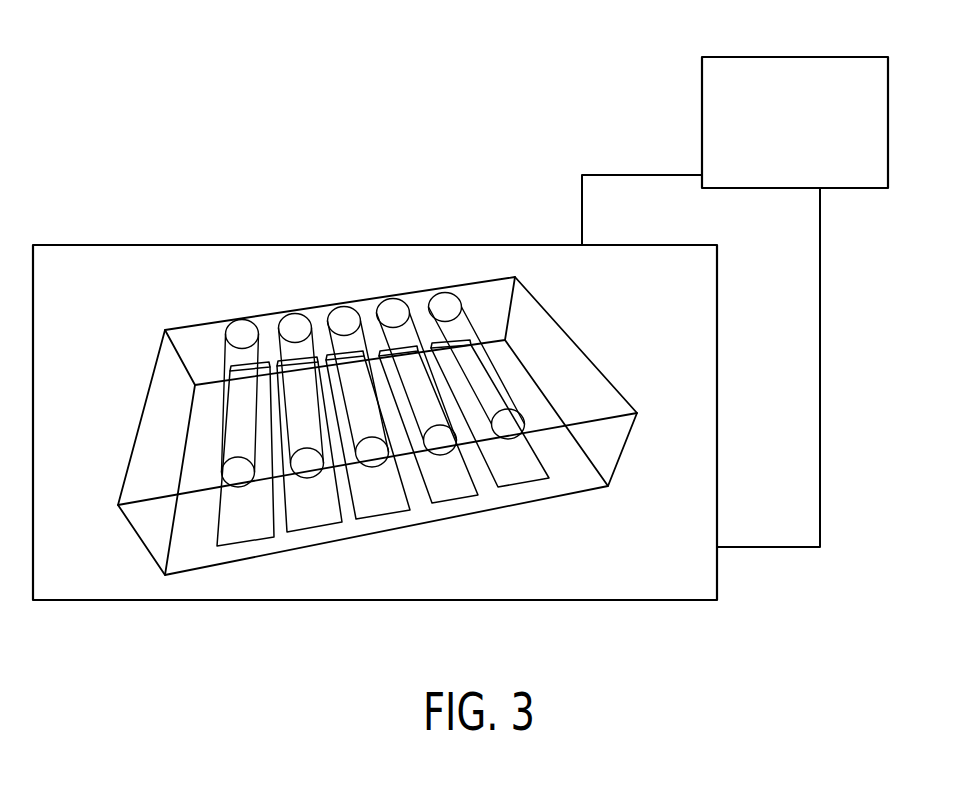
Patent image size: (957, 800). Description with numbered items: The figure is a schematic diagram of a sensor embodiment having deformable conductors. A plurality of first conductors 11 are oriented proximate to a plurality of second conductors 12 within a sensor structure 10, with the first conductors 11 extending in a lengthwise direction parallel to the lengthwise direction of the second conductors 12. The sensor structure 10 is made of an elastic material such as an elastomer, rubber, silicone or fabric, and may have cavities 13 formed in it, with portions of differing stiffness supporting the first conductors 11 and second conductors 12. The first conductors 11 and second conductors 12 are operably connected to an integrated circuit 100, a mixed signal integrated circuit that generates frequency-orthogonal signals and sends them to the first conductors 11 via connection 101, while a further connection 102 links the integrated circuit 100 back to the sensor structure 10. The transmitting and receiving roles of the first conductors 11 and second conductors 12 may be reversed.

The sensor structure 10 is at (530, 311).
The first conductors 11 is at (243, 337).
The second conductors 12 is at (247, 527).
The cavities 13 is at (517, 388).
The integrated circuit 100 is at (795, 57).
The connection 101 is at (623, 174).
The second connection line 102 is at (793, 548).